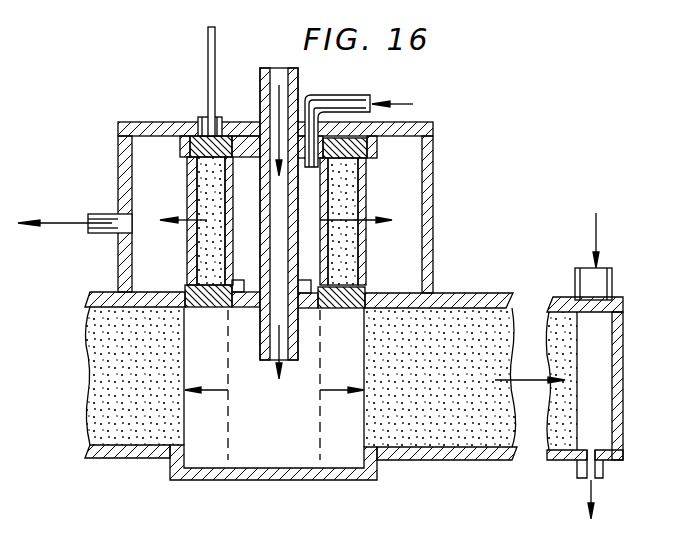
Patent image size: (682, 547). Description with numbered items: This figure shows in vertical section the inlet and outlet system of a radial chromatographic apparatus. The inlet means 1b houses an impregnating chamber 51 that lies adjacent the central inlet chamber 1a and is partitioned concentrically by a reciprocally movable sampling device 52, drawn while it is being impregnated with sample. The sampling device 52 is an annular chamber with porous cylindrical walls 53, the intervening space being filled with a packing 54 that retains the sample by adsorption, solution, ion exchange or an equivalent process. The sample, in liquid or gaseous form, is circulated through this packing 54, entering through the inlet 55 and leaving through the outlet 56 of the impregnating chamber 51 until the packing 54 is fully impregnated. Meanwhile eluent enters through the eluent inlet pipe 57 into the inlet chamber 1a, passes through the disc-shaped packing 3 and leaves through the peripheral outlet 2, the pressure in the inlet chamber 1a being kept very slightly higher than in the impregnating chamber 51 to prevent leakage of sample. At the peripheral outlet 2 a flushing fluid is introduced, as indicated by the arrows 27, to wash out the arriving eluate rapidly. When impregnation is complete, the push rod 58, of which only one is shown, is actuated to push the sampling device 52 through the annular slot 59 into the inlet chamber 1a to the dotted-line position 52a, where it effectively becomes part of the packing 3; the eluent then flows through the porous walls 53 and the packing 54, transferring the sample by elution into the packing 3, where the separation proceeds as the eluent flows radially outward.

The inlet chamber 1a is at (294, 424).
The inlet means 1b is at (425, 217).
The peripheral outlet 2 is at (600, 358).
The packing 3 is at (108, 368).
The flushing fluid introduction 27 is at (598, 243).
The impregnating chamber 51 is at (312, 258).
The sampling device 52 is at (364, 188).
The sampling device position 52a is at (227, 452).
The porous cylindrical walls 53 is at (197, 193).
The packing 54 is at (203, 237).
The inlet 55 is at (333, 101).
The outlet 56 is at (100, 213).
The eluent inlet pipe 57 is at (268, 84).
The push rod 58 is at (208, 56).
The annular slot 59 is at (320, 312).